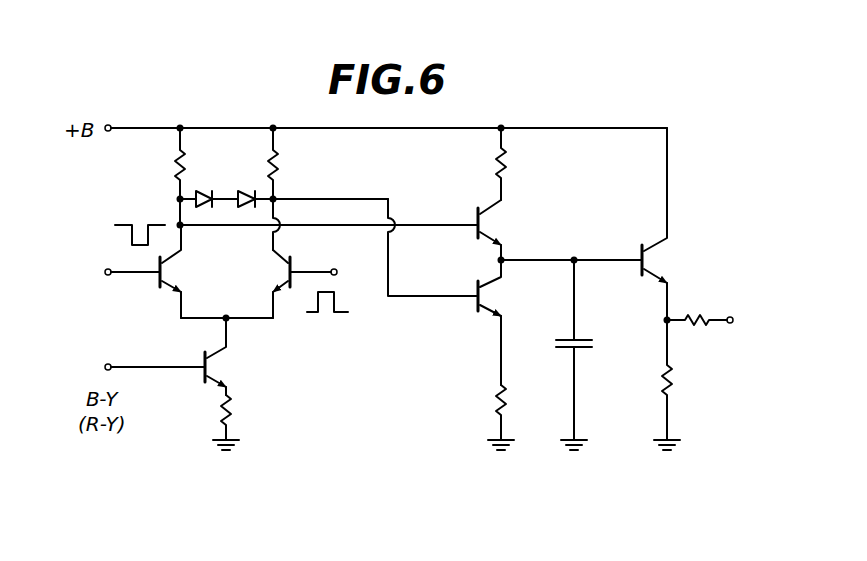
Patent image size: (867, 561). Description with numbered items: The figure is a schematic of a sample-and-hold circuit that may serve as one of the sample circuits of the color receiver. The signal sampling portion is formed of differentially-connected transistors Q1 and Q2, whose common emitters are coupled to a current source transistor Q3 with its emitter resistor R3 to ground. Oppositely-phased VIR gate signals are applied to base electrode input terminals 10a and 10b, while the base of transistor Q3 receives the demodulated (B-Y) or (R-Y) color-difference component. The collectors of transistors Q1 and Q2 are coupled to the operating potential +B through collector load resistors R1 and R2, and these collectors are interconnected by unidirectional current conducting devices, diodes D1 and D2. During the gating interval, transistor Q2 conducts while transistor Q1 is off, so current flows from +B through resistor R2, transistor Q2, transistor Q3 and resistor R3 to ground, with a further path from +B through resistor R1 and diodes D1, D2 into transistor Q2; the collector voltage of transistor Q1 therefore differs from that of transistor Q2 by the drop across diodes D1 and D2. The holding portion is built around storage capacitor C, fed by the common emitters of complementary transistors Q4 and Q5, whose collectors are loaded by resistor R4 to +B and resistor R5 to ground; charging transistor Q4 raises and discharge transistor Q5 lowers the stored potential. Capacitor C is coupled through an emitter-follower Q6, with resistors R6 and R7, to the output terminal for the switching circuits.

The collector load resistor R1 is at (177, 160).
The collector load resistor R2 is at (279, 165).
The resistor R3 is at (233, 410).
The collector load resistor R4 is at (506, 162).
The collector load resistor R5 is at (498, 404).
The resistor R6 is at (673, 380).
The resistor R7 is at (700, 319).
The diode D1 is at (201, 194).
The diode D2 is at (252, 182).
The transistor Q1 is at (170, 265).
The transistor Q2 is at (284, 283).
The current source transistor Q3 is at (203, 363).
The charging transistor Q4 is at (476, 214).
The discharge transistor Q5 is at (477, 288).
The emitter-follower Q6 is at (640, 262).
The storage capacitor C is at (594, 344).
The base electrode input terminal 10a is at (336, 270).
The base electrode input terminal 10b is at (106, 274).